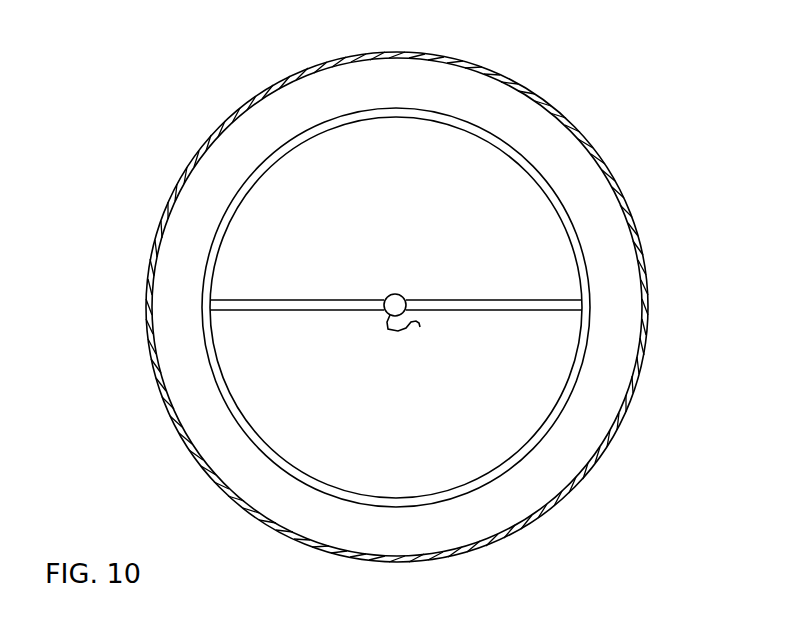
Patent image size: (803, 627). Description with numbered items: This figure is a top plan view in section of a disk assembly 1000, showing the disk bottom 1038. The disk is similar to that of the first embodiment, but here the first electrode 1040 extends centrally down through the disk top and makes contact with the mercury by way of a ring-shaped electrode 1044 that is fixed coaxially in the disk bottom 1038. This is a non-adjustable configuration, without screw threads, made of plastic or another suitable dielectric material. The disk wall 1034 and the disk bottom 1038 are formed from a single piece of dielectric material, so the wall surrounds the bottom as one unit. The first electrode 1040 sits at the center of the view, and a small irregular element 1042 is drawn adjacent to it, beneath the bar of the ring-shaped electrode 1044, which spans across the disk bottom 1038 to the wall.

The sealed assembly 1000 is at (549, 87).
The disk wall 1034 is at (592, 142).
The disk bottom 1038 is at (422, 228).
The first electrode 1040 is at (405, 297).
The flexible member 1042 is at (420, 327).
The ring-shaped electrode 1044 is at (563, 311).